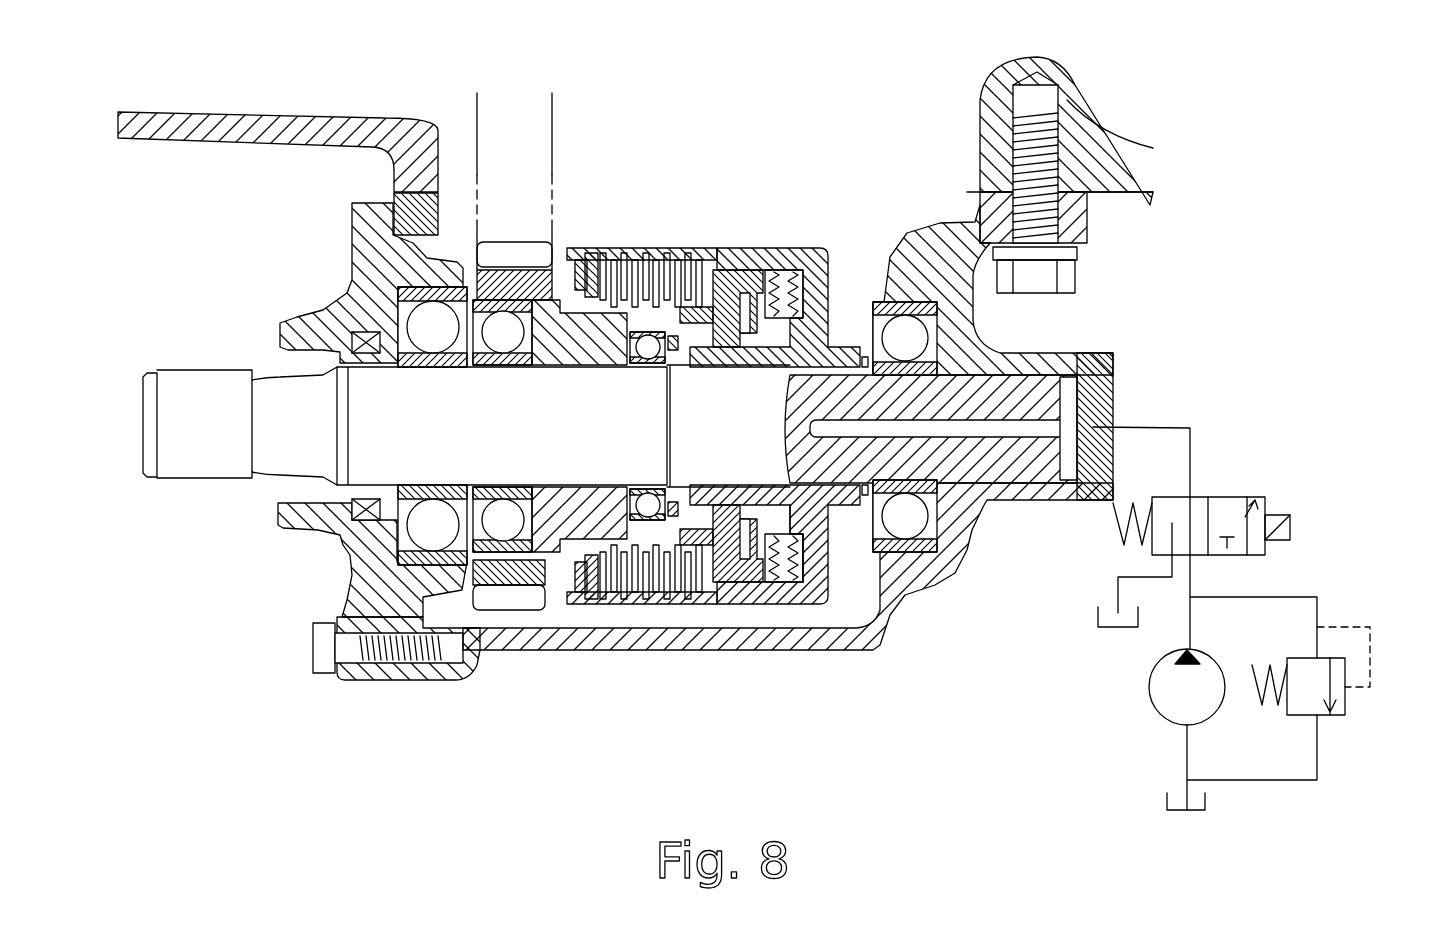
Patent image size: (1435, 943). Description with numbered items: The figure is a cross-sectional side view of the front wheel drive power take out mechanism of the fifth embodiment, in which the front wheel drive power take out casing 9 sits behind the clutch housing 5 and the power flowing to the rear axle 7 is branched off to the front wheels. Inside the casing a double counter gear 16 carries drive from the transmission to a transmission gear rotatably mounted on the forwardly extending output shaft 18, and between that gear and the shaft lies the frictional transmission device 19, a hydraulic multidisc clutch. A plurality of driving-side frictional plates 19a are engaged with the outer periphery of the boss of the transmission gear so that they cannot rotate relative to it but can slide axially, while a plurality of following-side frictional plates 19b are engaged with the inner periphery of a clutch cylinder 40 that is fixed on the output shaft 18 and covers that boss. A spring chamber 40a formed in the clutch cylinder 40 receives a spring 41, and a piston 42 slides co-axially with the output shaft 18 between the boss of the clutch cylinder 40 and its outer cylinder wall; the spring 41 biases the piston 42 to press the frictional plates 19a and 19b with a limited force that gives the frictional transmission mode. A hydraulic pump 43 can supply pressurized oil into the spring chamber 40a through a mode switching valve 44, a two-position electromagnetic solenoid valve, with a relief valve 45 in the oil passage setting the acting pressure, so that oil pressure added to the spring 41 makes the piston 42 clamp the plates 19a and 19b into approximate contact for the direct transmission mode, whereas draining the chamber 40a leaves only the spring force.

The clutch housing 5 is at (287, 113).
The rear axle 7 is at (518, 598).
The front wheel drive power take out casing 9 is at (740, 650).
The double counter gear 16 is at (552, 137).
The output shaft 18 is at (576, 452).
The frictional transmission device 19 is at (643, 427).
The driving-side frictional plates 19a is at (592, 545).
The following-side frictional plates 19b is at (645, 592).
The clutch cylinder 40 is at (790, 248).
The spring chamber 40a is at (833, 580).
The spring 41 is at (807, 583).
The piston 42 is at (757, 250).
The hydraulic pump 43 is at (1148, 690).
The mode switching valve 44 is at (1232, 497).
The relief valve 45 is at (1345, 705).